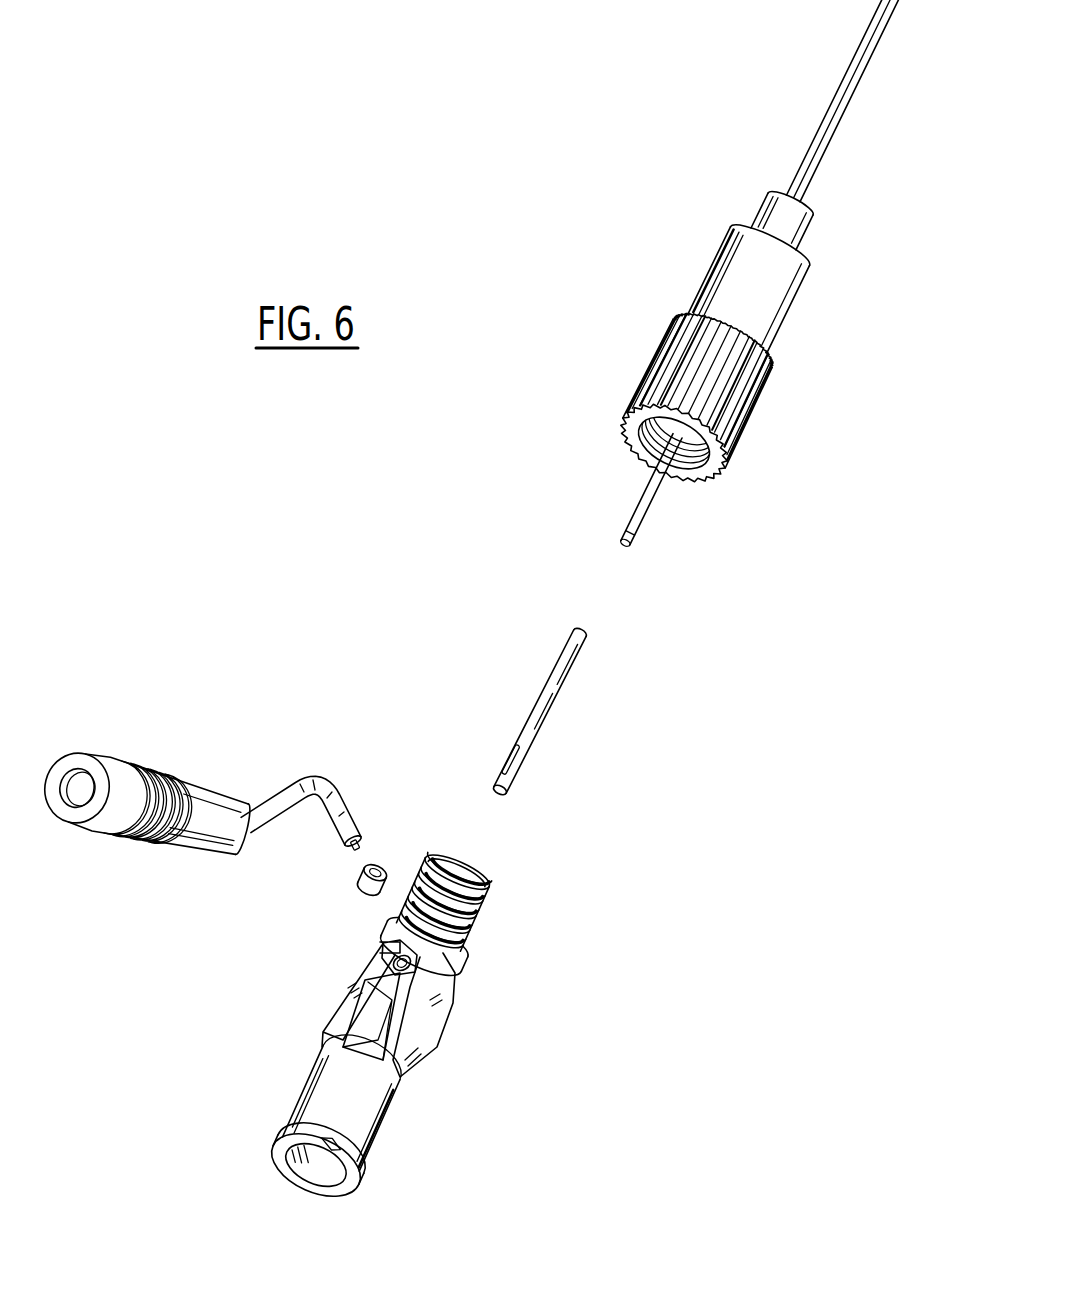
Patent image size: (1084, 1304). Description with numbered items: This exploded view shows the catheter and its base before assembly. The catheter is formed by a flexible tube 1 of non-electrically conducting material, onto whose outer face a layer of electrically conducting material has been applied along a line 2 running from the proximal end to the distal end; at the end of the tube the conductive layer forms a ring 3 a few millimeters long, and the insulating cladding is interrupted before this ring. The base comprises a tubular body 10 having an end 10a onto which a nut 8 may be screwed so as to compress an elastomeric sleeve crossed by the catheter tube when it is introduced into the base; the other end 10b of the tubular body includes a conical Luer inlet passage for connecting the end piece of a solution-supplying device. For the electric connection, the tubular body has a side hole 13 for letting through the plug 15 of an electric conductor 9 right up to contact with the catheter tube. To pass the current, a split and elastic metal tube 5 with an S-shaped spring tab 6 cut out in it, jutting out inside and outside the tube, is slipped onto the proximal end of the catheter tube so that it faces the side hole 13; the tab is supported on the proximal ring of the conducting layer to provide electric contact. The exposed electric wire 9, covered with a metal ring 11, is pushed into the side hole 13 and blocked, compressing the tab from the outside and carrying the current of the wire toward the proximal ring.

The flexible tube 1 is at (846, 92).
The line 2 is at (817, 170).
The ring 3 is at (615, 530).
The split and elastic metal tube 5 is at (560, 662).
The spring tab 6 is at (512, 755).
The nut 8 is at (795, 300).
The electric conductor 9 is at (291, 784).
The tubular body 10 is at (404, 1022).
The end of the tubular body 10a is at (493, 852).
The other end of the tubular body 10b is at (315, 1168).
The metal ring 11 is at (356, 887).
The side hole 13 is at (390, 962).
The plug 15 is at (352, 852).